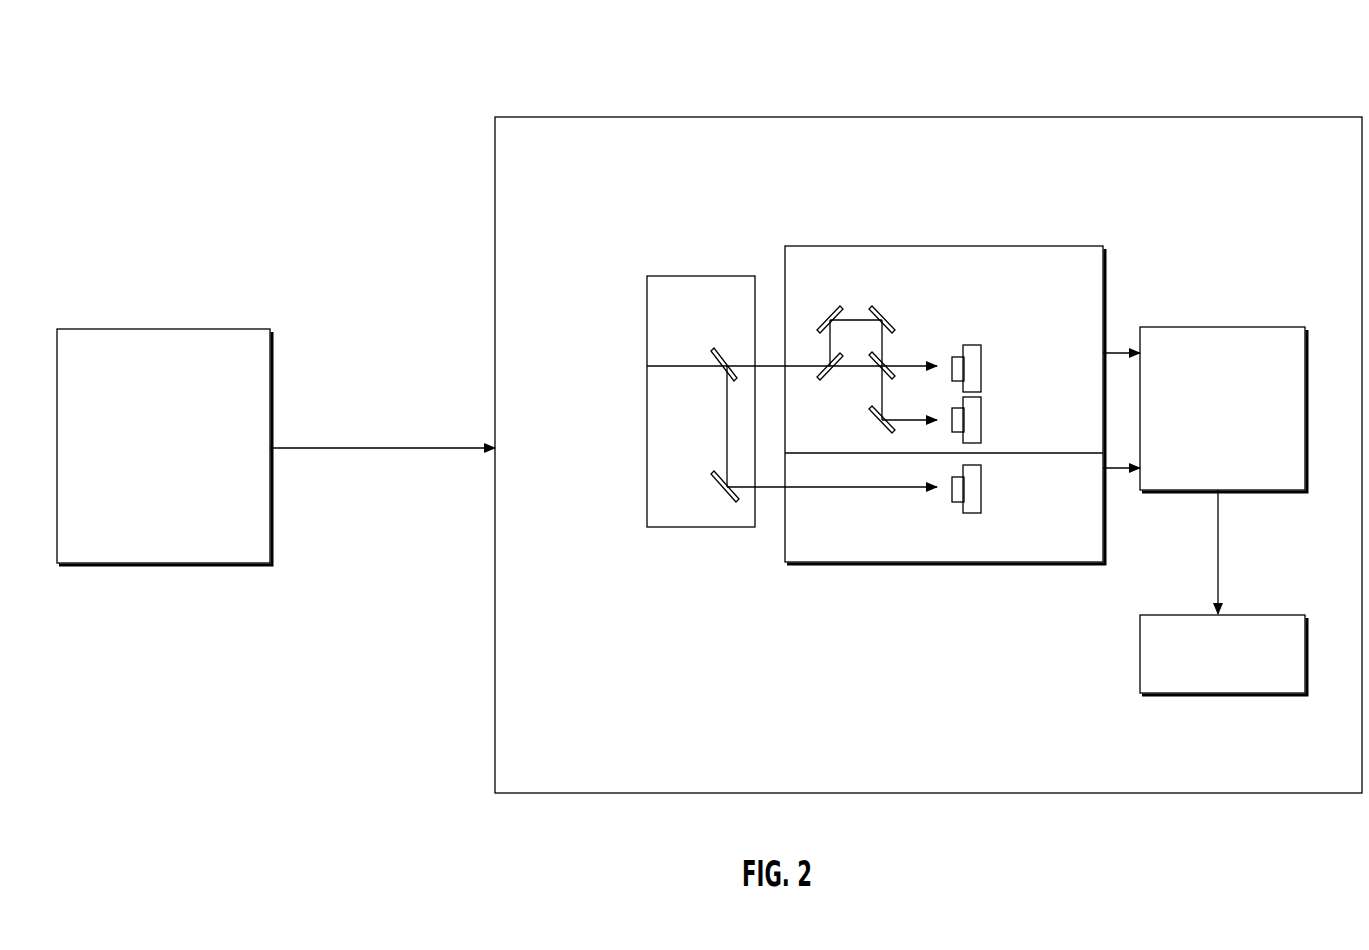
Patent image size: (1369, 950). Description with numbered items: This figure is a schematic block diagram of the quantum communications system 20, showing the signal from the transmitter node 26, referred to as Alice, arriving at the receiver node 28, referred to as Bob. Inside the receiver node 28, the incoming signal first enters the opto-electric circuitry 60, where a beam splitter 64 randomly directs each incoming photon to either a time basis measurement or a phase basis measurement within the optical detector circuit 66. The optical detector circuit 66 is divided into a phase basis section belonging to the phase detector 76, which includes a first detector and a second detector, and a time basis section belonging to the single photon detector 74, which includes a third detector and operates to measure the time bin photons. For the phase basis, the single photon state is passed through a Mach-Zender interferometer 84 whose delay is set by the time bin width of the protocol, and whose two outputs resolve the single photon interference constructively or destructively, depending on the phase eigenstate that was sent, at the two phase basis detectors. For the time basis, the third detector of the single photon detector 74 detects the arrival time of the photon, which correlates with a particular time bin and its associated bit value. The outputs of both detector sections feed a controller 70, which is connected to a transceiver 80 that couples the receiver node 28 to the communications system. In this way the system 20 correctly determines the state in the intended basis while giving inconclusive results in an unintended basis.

The quantum communications system 20 is at (752, 60).
The transmitter node 26 is at (253, 328).
The receiver node 28 is at (857, 116).
The opto-electric (OE) circuitry 60 is at (688, 275).
The beam splitter 64 is at (718, 498).
The optical detector circuit 66 is at (818, 565).
The controller 70 is at (1261, 326).
The single photon detector 74 is at (998, 515).
The phase detector 76 is at (1012, 333).
The transceiver 80 is at (1236, 613).
The Mach-Zender interferometer 84 is at (832, 310).